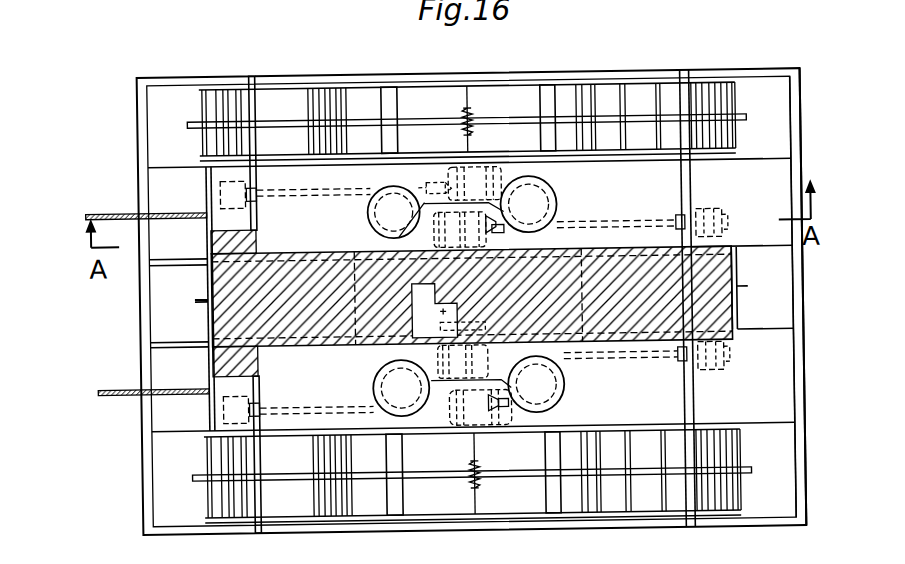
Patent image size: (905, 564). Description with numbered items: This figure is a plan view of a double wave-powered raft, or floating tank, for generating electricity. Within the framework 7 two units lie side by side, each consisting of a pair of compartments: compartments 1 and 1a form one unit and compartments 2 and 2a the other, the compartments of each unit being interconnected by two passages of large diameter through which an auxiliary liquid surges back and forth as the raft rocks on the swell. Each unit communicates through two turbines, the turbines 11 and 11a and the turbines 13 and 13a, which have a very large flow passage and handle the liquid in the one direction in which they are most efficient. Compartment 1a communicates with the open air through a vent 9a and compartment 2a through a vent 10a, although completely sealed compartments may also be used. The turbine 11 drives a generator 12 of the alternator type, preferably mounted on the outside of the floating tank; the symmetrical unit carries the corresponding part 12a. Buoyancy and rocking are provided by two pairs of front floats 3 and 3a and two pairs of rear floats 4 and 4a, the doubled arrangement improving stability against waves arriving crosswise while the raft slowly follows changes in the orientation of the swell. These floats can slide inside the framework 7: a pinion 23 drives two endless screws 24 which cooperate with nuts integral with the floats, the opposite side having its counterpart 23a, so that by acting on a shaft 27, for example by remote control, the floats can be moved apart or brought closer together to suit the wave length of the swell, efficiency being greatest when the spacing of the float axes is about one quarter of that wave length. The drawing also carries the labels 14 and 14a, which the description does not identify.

The compartment 1 is at (288, 372).
The compartment 1a is at (282, 173).
The compartment 2 is at (653, 402).
The compartment 2a is at (663, 182).
The front float 3 is at (312, 519).
The front float 3a is at (290, 85).
The rear float 4 is at (708, 519).
The rear float 4a is at (706, 85).
The framework 7 is at (803, 143).
The vent 9a is at (369, 214).
The vent 10a is at (552, 197).
The turbine 11 is at (480, 230).
The turbine 11a is at (480, 356).
The generator 12 is at (729, 221).
The hydraulic cylinder 12a is at (729, 357).
The turbine 13 is at (462, 182).
The turbine 13a is at (453, 405).
The hydraulic cylinder 14 is at (222, 192).
The hydraulic cylinder 14a is at (227, 413).
The pinion 23 is at (476, 120).
The spring 23a is at (477, 488).
The endless screws 24 is at (525, 120).
The shaft 27 is at (470, 95).